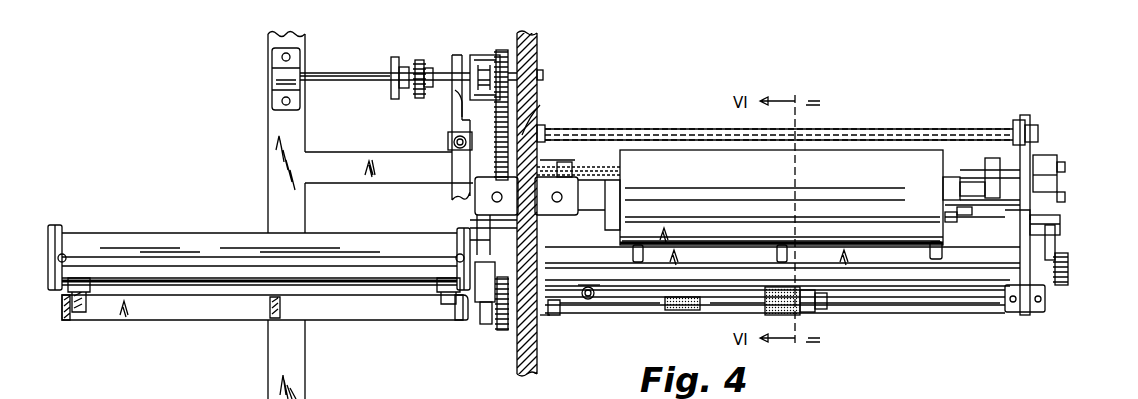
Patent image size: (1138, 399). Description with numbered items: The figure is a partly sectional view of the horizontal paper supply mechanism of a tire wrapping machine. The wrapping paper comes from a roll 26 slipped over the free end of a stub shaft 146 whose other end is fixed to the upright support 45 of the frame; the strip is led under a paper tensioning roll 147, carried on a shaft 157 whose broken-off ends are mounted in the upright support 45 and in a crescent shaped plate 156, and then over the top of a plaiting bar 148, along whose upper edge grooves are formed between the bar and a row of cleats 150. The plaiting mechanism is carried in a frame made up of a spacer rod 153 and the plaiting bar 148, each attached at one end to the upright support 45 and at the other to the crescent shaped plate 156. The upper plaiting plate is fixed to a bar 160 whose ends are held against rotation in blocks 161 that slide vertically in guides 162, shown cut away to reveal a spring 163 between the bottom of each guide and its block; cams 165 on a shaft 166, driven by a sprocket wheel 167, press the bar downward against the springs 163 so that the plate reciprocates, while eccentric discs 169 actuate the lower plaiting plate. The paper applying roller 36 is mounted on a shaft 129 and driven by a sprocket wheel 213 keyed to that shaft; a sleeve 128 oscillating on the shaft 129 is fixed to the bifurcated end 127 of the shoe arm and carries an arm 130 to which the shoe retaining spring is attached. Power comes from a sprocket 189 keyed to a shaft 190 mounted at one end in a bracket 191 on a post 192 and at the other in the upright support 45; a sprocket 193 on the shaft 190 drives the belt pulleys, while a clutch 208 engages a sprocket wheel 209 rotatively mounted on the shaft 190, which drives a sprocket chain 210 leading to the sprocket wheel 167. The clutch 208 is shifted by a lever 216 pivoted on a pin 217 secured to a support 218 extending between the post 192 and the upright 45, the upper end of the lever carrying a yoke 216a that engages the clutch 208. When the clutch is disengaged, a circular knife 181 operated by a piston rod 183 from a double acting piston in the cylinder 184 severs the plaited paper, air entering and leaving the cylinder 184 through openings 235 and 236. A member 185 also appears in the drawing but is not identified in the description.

The roll 26 is at (867, 155).
The paper applying roller 36 is at (790, 315).
The upright support 45 is at (537, 53).
The bifurcated end 127 is at (823, 319).
The sleeve 128 is at (590, 298).
The shaft 129 is at (668, 314).
The arm 130 is at (552, 345).
The stub shaft 146 is at (618, 182).
The paper tensioning roll 147 is at (957, 224).
The plaiting bar 148 is at (890, 250).
The cleats 150 is at (790, 256).
The spacer rod 153 is at (905, 126).
The crescent shaped plate 156 is at (1035, 146).
The shaft 157 is at (964, 218).
The bar 160 is at (972, 178).
The blocks 161 is at (1043, 165).
The guides 162 is at (1058, 226).
The spring 163 is at (1058, 204).
The cams 165 is at (586, 162).
The shaft 166 is at (613, 166).
The sprocket wheel 167 is at (532, 150).
The eccentric discs 169 is at (1064, 166).
The circular knife 181 is at (553, 316).
The piston rod 183 is at (482, 302).
The cylinder 184 is at (92, 212).
The frame 185 is at (94, 310).
The sprocket 189 is at (391, 61).
The shaft 190 is at (328, 80).
The bracket 191 is at (272, 78).
The post 192 is at (280, 121).
The sprocket 193 is at (423, 57).
The clutch 208 is at (470, 82).
The sprocket wheel 209 is at (502, 52).
The sprocket chain 210 is at (541, 89).
The sprocket wheel 213 is at (502, 330).
The lever 216 is at (460, 186).
The yoke 216a is at (462, 106).
The pin 217 is at (454, 149).
The support 218 is at (356, 157).
The opening 235 is at (66, 258).
The opening 236 is at (456, 258).